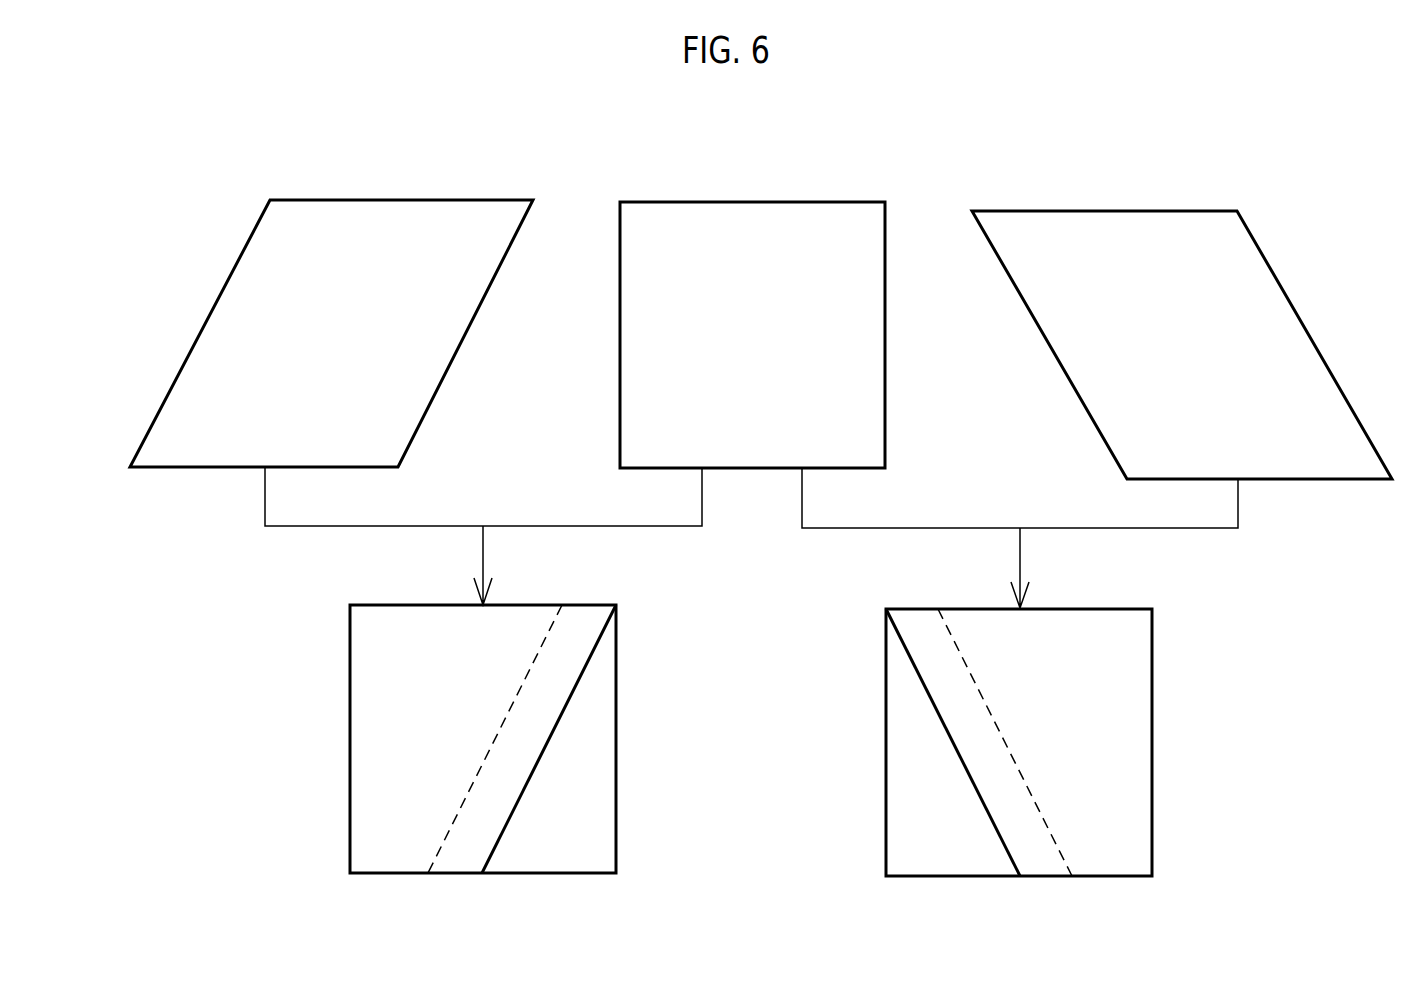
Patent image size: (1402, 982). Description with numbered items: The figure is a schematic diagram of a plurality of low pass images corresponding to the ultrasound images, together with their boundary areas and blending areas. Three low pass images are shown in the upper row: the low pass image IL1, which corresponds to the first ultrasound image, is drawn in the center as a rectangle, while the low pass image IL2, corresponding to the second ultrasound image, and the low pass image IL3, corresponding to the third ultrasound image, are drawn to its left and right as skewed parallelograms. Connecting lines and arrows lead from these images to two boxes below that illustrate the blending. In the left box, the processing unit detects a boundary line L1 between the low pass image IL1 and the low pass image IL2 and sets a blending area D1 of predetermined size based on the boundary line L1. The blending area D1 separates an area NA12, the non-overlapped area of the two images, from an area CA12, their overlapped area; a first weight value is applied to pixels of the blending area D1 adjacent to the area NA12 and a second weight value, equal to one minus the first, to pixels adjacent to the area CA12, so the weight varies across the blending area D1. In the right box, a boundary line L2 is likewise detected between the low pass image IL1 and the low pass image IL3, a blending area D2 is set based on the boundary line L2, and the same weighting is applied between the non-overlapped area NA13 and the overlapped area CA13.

The low pass image IL1 is at (752, 202).
The low pass image IL2 is at (400, 200).
The low pass image IL3 is at (1102, 211).
The overlapped area CA12 is at (456, 739).
The non-overlapped area NA12 is at (522, 739).
The blending area D1 is at (495, 739).
The boundary line L1 is at (578, 678).
The overlapped area CA13 is at (1045, 742).
The non-overlapped area NA13 is at (979, 742).
The blending area D2 is at (1005, 742).
The boundary line L2 is at (922, 685).